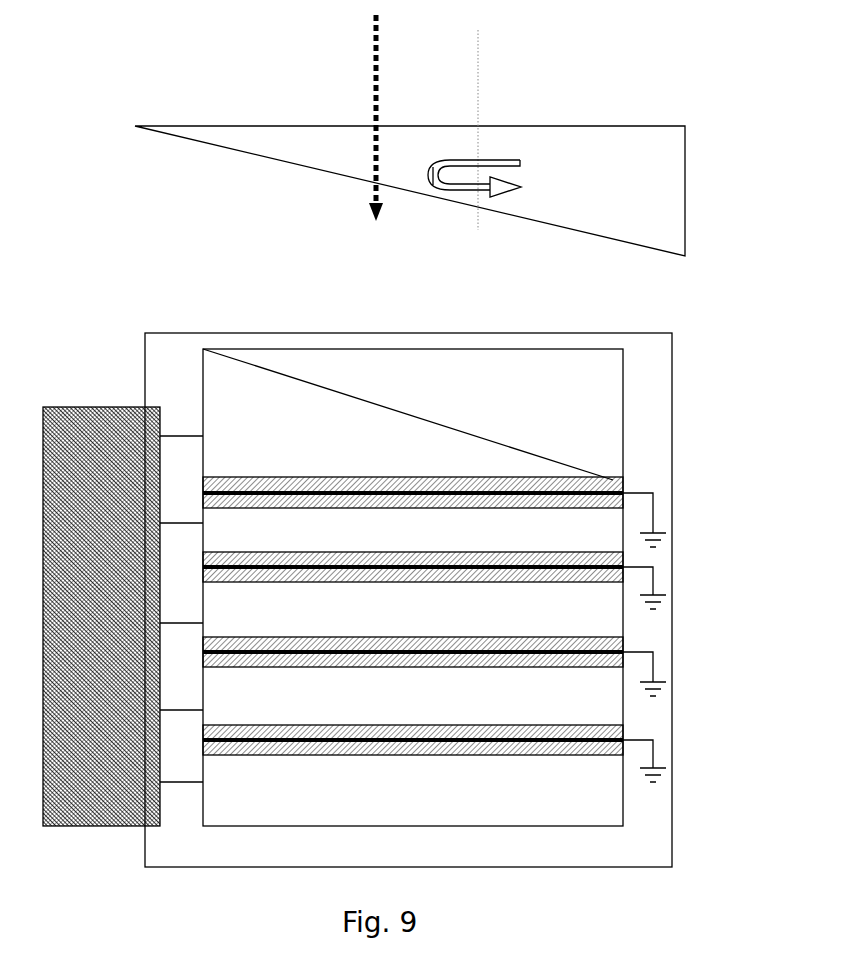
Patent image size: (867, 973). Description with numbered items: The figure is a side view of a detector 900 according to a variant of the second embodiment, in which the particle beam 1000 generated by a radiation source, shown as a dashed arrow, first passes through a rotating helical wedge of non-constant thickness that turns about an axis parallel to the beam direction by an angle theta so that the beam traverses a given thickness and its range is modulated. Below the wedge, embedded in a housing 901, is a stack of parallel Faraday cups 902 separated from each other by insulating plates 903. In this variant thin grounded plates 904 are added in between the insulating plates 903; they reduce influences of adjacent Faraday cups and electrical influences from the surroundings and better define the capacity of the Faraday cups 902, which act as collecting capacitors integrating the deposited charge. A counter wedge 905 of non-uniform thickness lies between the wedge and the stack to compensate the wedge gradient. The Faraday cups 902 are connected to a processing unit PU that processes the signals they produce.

The detector 900 is at (236, 65).
The particle beam 1000 is at (378, 27).
The grounded plates 904 is at (577, 126).
The housing 901 is at (494, 333).
The counter wedge 905 is at (204, 362).
The insulating plates 903 is at (607, 730).
The Faraday cups 902 is at (606, 527).
The processing unit PU is at (133, 826).